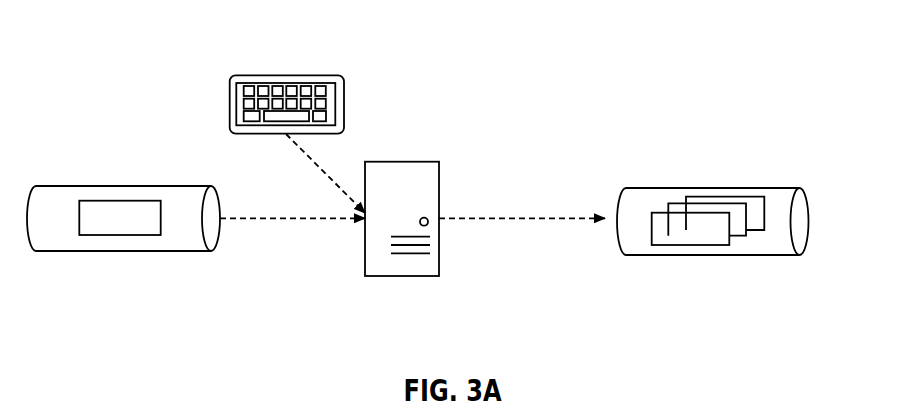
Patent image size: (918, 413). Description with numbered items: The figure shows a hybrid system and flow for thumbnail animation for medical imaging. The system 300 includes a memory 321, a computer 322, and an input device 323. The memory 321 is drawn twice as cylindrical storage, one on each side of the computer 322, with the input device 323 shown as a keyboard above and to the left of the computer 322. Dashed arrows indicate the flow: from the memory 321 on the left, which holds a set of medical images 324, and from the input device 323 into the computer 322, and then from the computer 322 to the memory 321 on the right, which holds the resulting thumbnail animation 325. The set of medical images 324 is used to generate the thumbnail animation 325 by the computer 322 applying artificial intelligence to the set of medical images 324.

The system 300 is at (573, 110).
The memory 321 is at (418, 258).
The computer 322 is at (426, 277).
The input device 323 is at (285, 73).
The set of medical images 324 is at (101, 228).
The thumbnail animation 325 is at (700, 240).